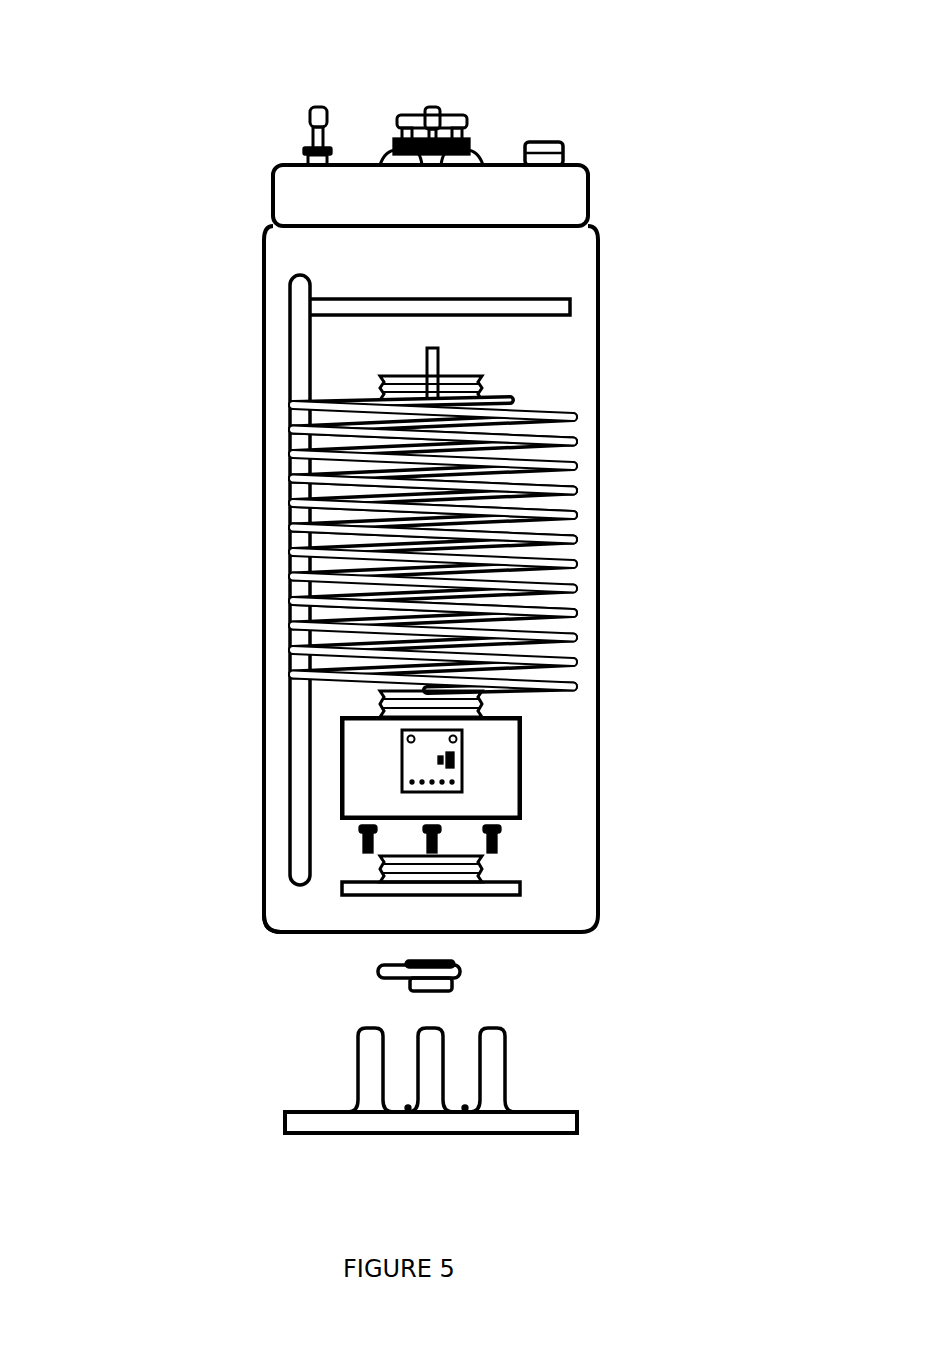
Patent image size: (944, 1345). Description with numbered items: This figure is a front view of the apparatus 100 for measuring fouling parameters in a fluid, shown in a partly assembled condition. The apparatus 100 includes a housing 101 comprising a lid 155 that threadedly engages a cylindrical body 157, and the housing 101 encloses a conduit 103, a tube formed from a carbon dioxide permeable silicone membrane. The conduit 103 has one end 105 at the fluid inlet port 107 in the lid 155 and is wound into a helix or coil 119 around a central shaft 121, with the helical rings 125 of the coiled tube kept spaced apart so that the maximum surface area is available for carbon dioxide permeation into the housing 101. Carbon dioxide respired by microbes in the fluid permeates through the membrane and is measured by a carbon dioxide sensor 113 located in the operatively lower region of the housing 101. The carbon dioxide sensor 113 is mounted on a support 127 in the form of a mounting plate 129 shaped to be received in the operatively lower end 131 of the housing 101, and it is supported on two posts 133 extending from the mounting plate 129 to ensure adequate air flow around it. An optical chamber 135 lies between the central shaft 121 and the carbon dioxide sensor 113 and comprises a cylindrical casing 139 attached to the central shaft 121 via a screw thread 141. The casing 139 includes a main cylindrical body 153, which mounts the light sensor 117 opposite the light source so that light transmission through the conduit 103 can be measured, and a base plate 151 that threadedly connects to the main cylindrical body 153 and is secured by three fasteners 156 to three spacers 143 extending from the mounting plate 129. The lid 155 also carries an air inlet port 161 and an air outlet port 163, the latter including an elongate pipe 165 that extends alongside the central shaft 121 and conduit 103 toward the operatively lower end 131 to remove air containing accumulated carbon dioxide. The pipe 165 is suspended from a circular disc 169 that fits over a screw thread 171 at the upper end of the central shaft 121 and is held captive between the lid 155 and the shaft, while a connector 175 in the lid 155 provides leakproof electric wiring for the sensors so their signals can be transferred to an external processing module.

The apparatus 100 is at (176, 138).
The housing 101 is at (262, 193).
The conduit 103 is at (578, 416).
The one end of the conduit 105 is at (435, 350).
The fluid inlet port 107 is at (425, 114).
The carbon dioxide sensor 113 is at (462, 975).
The light sensor 117 is at (410, 765).
The helix or coil 119 is at (590, 453).
The central shaft 121 is at (578, 612).
The helical rings 125 is at (576, 486).
The support 127 is at (456, 1106).
The mounting plate 129 is at (487, 1122).
The operatively lower end of the housing 131 is at (267, 932).
The posts 133 is at (465, 1108).
The optical chamber 135 is at (490, 755).
The cylindrical casing 139 is at (518, 800).
The screw thread 141 is at (486, 694).
The spacers 143 is at (368, 1046).
The base plate 151 is at (520, 883).
The main cylindrical body 153 is at (368, 738).
The lid 155 is at (566, 197).
The fasteners 156 is at (372, 845).
The cylindrical body 157 is at (263, 344).
The air inlet port 161 is at (545, 148).
The air outlet port 163 is at (313, 122).
The elongate pipe 165 is at (300, 373).
The circular disc 169 is at (305, 299).
The screw thread 171 is at (484, 384).
The connector 175 is at (446, 112).